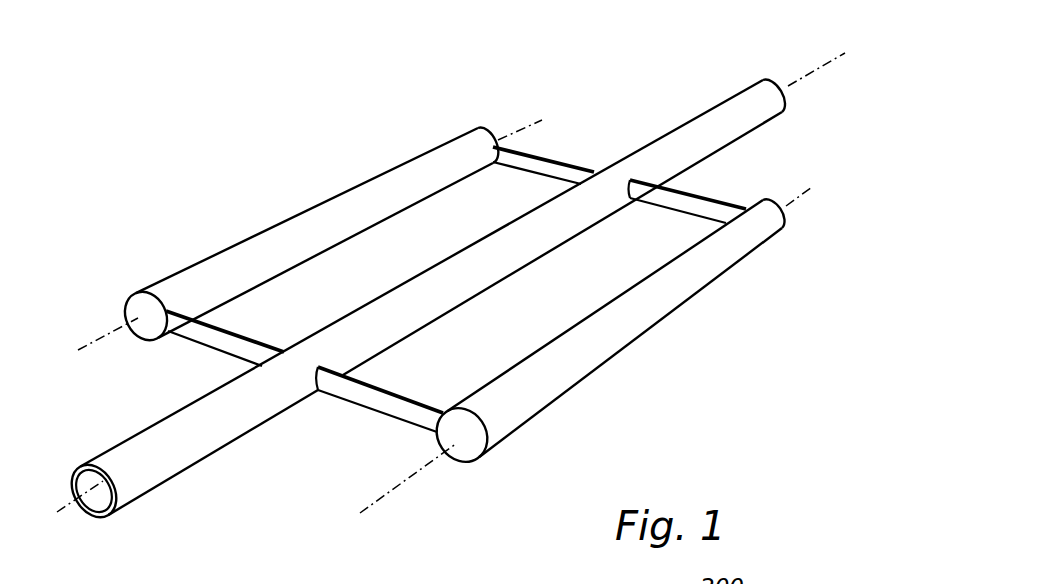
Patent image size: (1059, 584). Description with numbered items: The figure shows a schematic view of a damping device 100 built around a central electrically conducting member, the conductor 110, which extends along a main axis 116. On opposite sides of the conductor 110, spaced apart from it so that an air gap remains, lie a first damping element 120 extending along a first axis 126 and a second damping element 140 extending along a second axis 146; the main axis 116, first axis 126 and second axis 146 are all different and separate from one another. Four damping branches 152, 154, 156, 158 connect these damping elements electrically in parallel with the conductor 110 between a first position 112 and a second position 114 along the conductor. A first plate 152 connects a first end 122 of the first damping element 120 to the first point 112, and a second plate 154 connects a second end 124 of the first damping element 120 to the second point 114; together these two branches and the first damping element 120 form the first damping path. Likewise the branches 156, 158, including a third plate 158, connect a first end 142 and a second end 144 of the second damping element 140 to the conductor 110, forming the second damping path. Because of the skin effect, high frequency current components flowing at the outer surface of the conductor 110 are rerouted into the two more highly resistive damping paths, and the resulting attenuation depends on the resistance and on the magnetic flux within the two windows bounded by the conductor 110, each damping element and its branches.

The device 100 is at (362, 70).
The conductor 110 is at (473, 272).
The first position 112 is at (303, 340).
The second position 114 is at (601, 145).
The main axis 116 is at (63, 507).
The first damping element 120 is at (302, 227).
The first end of the first damping element 122 is at (121, 303).
The second end of the first damping element 124 is at (506, 116).
The first axis 126 is at (95, 343).
The second damping element 140 is at (640, 318).
The first end of the second damping element 142 is at (471, 464).
The second end of the second damping element 144 is at (795, 207).
The second axis 146 is at (397, 493).
The first plate 152 is at (203, 338).
The second plate 154 is at (532, 162).
The damping branch 156 is at (387, 402).
The third plate 158 is at (668, 202).